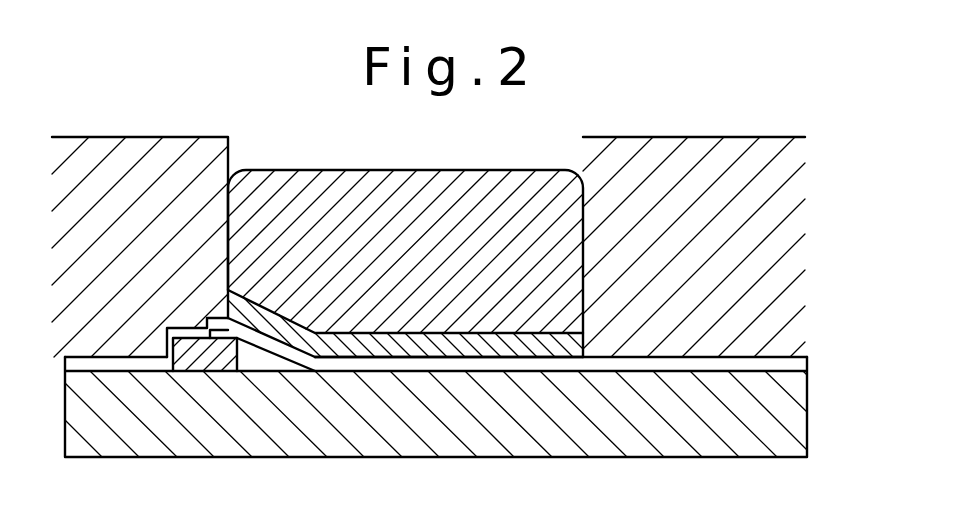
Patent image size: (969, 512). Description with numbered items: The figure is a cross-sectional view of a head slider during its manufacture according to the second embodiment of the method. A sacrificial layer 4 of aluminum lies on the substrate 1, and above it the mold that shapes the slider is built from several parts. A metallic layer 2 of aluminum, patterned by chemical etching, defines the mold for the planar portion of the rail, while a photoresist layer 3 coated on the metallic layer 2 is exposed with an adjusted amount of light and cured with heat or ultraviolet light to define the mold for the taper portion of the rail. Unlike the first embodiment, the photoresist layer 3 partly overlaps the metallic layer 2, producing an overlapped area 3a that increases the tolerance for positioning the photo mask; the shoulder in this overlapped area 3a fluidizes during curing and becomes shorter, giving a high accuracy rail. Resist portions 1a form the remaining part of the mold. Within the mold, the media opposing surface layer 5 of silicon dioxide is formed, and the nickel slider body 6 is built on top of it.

The substrate 1 is at (797, 410).
The part of mold consisting of a resist 1a is at (229, 171).
The metallic layer 2 is at (182, 352).
The photoresist layer 3 is at (278, 360).
The overlapped area 3a is at (222, 318).
The sacrificial layer 4 is at (762, 363).
The media opposing surface layer 5 is at (577, 348).
The slider body 6 is at (572, 240).